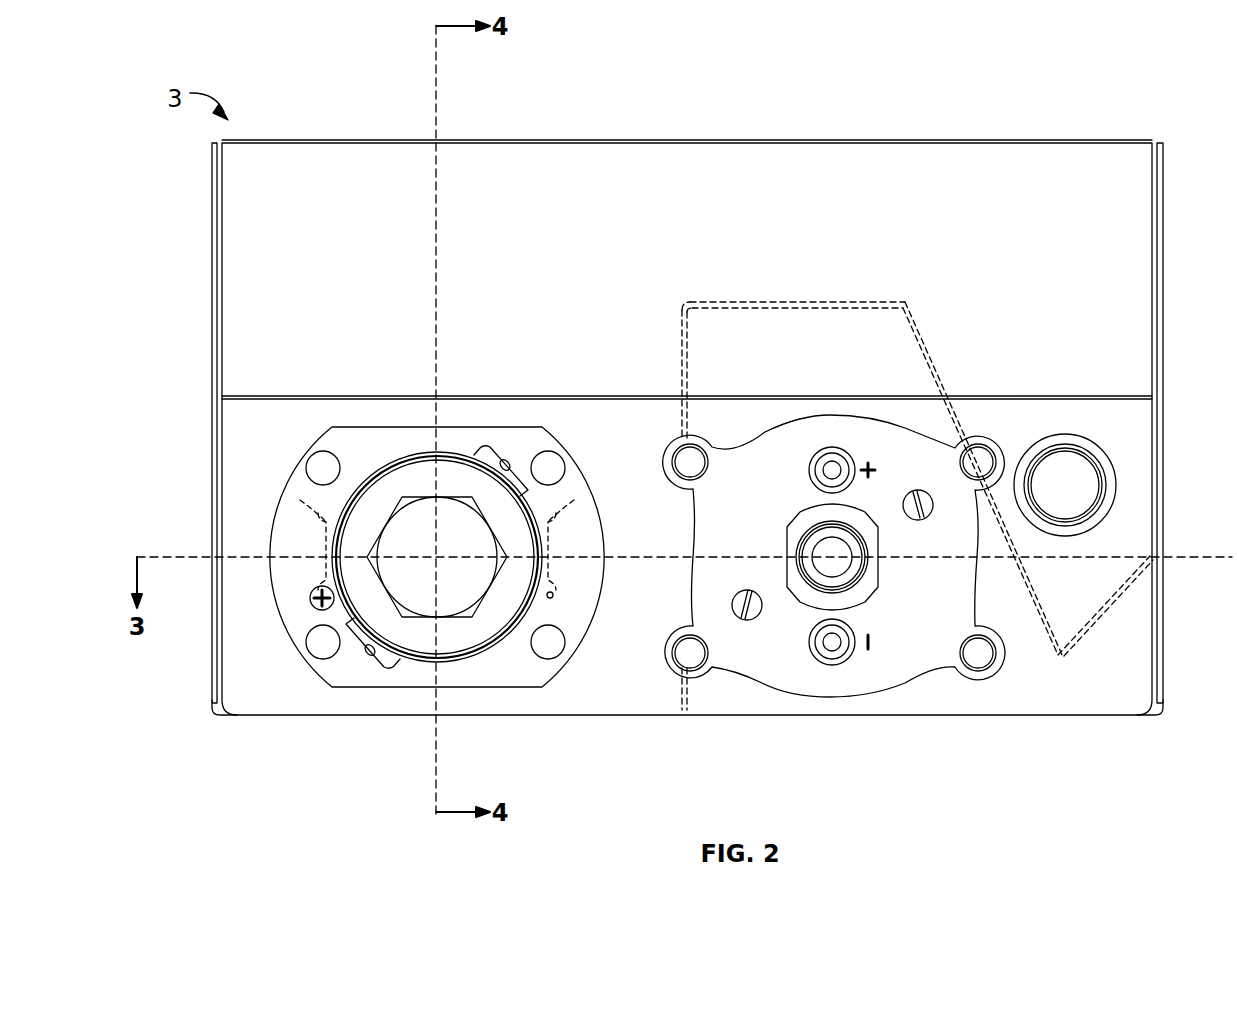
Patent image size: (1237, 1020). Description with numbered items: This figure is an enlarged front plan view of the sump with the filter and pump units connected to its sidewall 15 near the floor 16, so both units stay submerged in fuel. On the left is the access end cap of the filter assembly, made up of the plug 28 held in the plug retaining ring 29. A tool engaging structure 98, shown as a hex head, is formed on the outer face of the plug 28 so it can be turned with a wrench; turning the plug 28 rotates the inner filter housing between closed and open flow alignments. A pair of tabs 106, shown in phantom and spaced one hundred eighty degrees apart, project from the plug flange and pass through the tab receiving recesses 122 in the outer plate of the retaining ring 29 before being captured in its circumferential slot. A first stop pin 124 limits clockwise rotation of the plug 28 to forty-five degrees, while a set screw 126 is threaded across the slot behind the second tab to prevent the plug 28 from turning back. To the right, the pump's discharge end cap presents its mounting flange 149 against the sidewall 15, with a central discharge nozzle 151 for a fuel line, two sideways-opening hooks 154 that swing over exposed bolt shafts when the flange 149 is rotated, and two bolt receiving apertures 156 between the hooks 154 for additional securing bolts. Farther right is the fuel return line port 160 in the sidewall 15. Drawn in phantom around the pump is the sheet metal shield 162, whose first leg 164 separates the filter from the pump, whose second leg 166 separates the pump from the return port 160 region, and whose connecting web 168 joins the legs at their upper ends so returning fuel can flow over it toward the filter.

The sump sidewall 15 is at (1133, 433).
The floor 16 is at (172, 745).
The plug 28 is at (400, 497).
The plug retaining ring 29 is at (270, 545).
The tool engaging structure 98 is at (425, 476).
The tabs 106 is at (318, 522).
The tab receiving recesses 122 is at (508, 463).
The first stop pin 124 is at (556, 598).
The set screw 126 is at (312, 603).
The mounting flange 149 is at (720, 660).
The discharge nozzle 151 is at (787, 525).
The hooks 154 is at (672, 453).
The bolt receiving apertures 156 is at (978, 448).
The fuel return line port 160 is at (1065, 448).
The shield 162 is at (684, 304).
The first leg 164 is at (680, 352).
The second leg 166 is at (925, 327).
The connecting web 168 is at (790, 300).